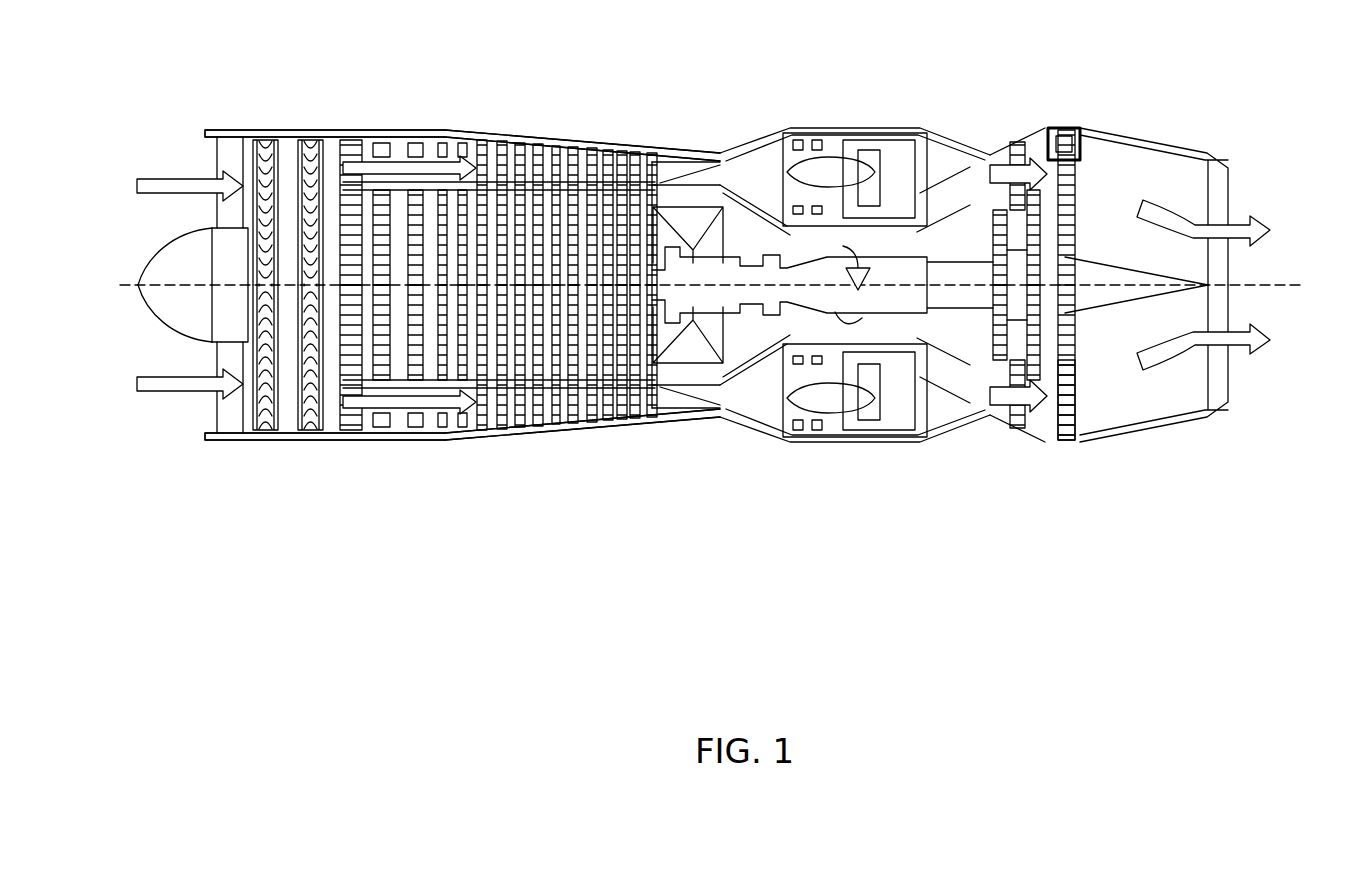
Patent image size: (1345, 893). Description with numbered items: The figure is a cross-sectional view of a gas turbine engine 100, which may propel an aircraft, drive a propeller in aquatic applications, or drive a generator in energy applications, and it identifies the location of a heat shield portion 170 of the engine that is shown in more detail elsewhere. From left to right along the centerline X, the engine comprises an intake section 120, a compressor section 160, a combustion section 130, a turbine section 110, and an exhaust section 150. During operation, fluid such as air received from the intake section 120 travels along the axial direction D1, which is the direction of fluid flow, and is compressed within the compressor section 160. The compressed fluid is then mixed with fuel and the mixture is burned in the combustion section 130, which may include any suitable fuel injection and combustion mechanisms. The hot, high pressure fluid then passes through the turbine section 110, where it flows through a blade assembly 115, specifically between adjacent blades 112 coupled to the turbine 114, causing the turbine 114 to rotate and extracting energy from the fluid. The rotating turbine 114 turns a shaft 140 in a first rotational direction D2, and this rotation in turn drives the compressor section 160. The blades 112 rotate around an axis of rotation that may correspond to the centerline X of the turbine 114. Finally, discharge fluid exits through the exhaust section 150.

The gas turbine engine 100 is at (768, 468).
The turbine section 110 is at (1043, 120).
The blades 112 is at (1063, 258).
The turbine 114 is at (1087, 300).
The blade assembly 115 is at (1082, 398).
The intake section 120 is at (198, 414).
The combustion section 130 is at (930, 155).
The shaft 140 is at (900, 292).
The exhaust section 150 is at (1236, 193).
The compressor section 160 is at (496, 130).
The heat shield portion 170 is at (1082, 137).
The axial direction D1 is at (170, 180).
The first rotational direction D2 is at (858, 255).
The centerline X is at (722, 285).